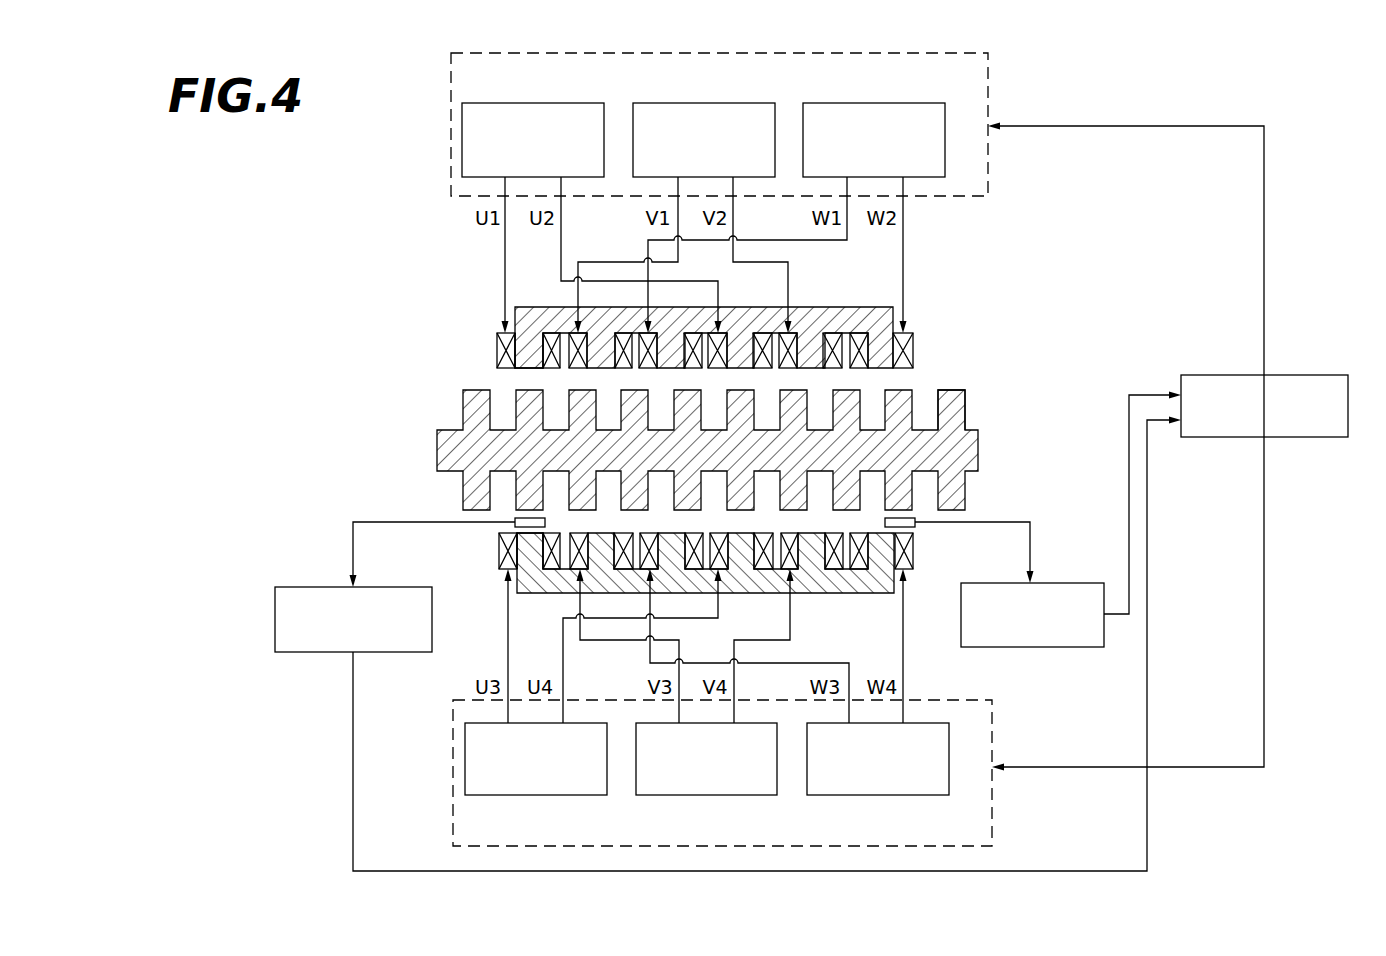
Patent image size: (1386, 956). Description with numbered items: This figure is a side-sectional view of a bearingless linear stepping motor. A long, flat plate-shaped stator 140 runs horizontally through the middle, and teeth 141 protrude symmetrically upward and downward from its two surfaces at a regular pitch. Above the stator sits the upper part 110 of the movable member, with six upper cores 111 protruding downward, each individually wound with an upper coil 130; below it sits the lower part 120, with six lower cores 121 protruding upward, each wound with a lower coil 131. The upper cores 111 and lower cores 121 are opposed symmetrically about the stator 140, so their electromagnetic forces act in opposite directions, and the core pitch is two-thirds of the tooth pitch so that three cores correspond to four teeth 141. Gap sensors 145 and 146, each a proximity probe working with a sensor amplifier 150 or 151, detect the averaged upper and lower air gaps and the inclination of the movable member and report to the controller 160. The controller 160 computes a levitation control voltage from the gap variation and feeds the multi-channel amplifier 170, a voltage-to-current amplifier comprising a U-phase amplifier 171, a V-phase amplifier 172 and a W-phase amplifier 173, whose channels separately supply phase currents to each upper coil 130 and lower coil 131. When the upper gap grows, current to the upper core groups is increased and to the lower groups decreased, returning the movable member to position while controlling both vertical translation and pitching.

The upper part of the movable member 110 is at (828, 307).
The upper core 111 is at (500, 362).
The lower part of the movable member 120 is at (835, 594).
The lower core 121 is at (517, 540).
The upper coil 130 is at (497, 342).
The lower coil 131 is at (500, 572).
The stator 140 is at (437, 442).
The teeth 141 is at (957, 390).
The gap sensor 145 is at (547, 523).
The gap sensor 146 is at (885, 523).
The sensor amplifier 150 is at (305, 587).
The sensor amplifier 151 is at (1082, 583).
The controller 160 is at (1318, 375).
The multi-channel amplifier 170 is at (451, 121).
The U-phase amplifier 171 is at (565, 103).
The V-phase amplifier 172 is at (737, 103).
The W-phase amplifier 173 is at (909, 103).